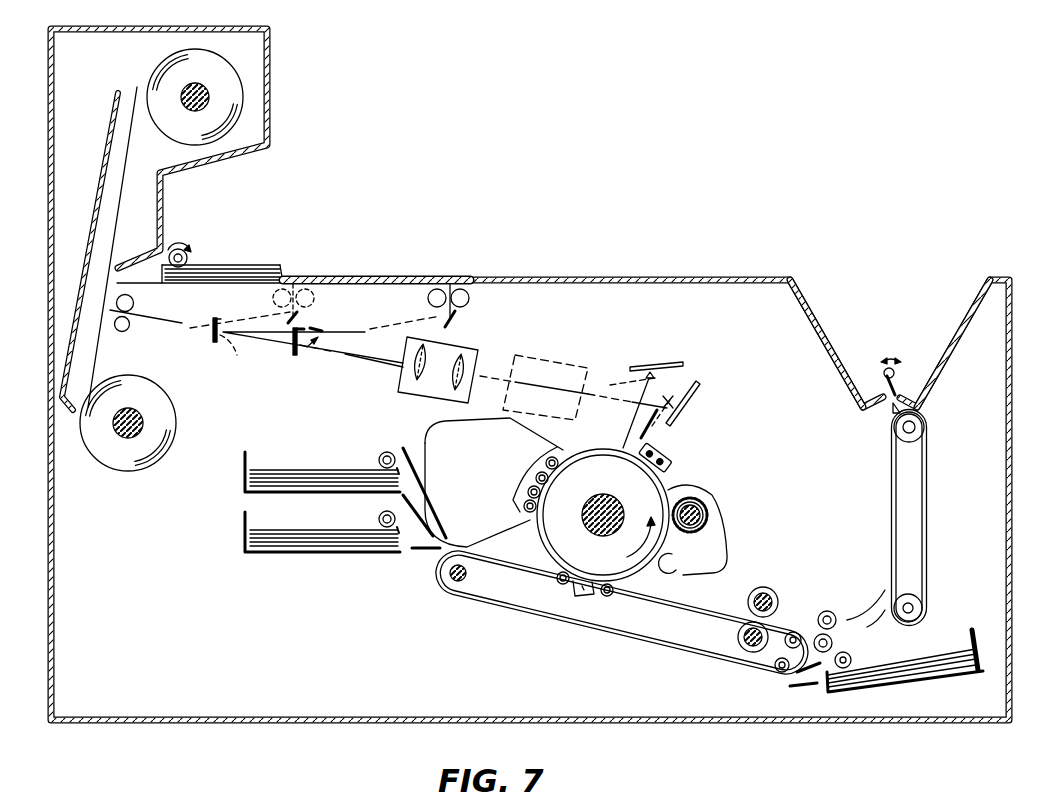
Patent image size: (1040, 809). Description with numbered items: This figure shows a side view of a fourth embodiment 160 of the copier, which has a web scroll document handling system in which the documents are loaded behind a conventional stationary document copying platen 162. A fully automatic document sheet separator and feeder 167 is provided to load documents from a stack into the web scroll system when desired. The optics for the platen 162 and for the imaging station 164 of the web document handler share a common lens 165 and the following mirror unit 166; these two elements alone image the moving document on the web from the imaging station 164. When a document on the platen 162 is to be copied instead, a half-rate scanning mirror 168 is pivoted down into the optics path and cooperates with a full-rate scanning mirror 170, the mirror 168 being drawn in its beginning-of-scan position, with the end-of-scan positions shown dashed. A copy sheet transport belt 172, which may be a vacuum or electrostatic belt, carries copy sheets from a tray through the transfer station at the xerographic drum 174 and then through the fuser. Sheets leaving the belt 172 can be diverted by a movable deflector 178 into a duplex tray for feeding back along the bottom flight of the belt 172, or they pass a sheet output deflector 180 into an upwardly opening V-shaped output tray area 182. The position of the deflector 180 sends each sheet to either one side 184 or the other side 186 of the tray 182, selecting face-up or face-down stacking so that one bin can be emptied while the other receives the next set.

The further embodiment 160 is at (484, 165).
The stationary document copying platen 162 is at (428, 275).
The imaging station 164 is at (144, 324).
The lens 165 is at (458, 347).
The mirror unit 166 is at (703, 368).
The document sheet separator and feeder 167 is at (206, 246).
The half-rate scanning mirror 168 is at (293, 345).
The full-rate scanning mirror 170 is at (441, 319).
The copy sheet transport belt 172 is at (717, 603).
The xerographic drum 174 is at (667, 481).
The movable deflector 178 is at (841, 640).
The sheet output deflector 180 is at (897, 388).
The output tray area 182 is at (890, 300).
The output bin side 184 is at (818, 320).
The output bin side 186 is at (973, 308).